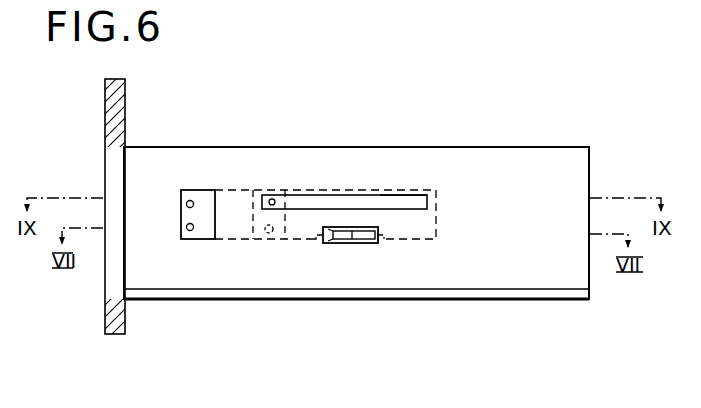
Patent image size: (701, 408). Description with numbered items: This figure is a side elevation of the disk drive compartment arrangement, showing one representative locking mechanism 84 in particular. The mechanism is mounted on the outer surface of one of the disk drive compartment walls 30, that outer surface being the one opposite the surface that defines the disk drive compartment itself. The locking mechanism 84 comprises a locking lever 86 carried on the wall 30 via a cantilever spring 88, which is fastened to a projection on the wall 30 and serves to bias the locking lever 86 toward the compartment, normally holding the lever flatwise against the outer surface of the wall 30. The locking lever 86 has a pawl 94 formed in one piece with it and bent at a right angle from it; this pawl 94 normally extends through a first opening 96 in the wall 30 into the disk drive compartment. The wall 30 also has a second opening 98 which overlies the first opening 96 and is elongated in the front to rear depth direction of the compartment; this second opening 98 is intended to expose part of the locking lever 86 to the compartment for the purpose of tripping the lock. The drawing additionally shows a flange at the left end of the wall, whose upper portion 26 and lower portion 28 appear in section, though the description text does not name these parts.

The mounting flange (upper portion) 26 is at (105, 112).
The mounting flange (lower portion) 28 is at (116, 287).
The disk drive compartment wall 30 is at (555, 156).
The locking mechanism 84 is at (437, 178).
The locking lever 86 is at (330, 203).
The cantilever spring 88 is at (238, 190).
The pawl 94 is at (348, 243).
The first opening 96 is at (375, 240).
The second opening 98 is at (397, 203).